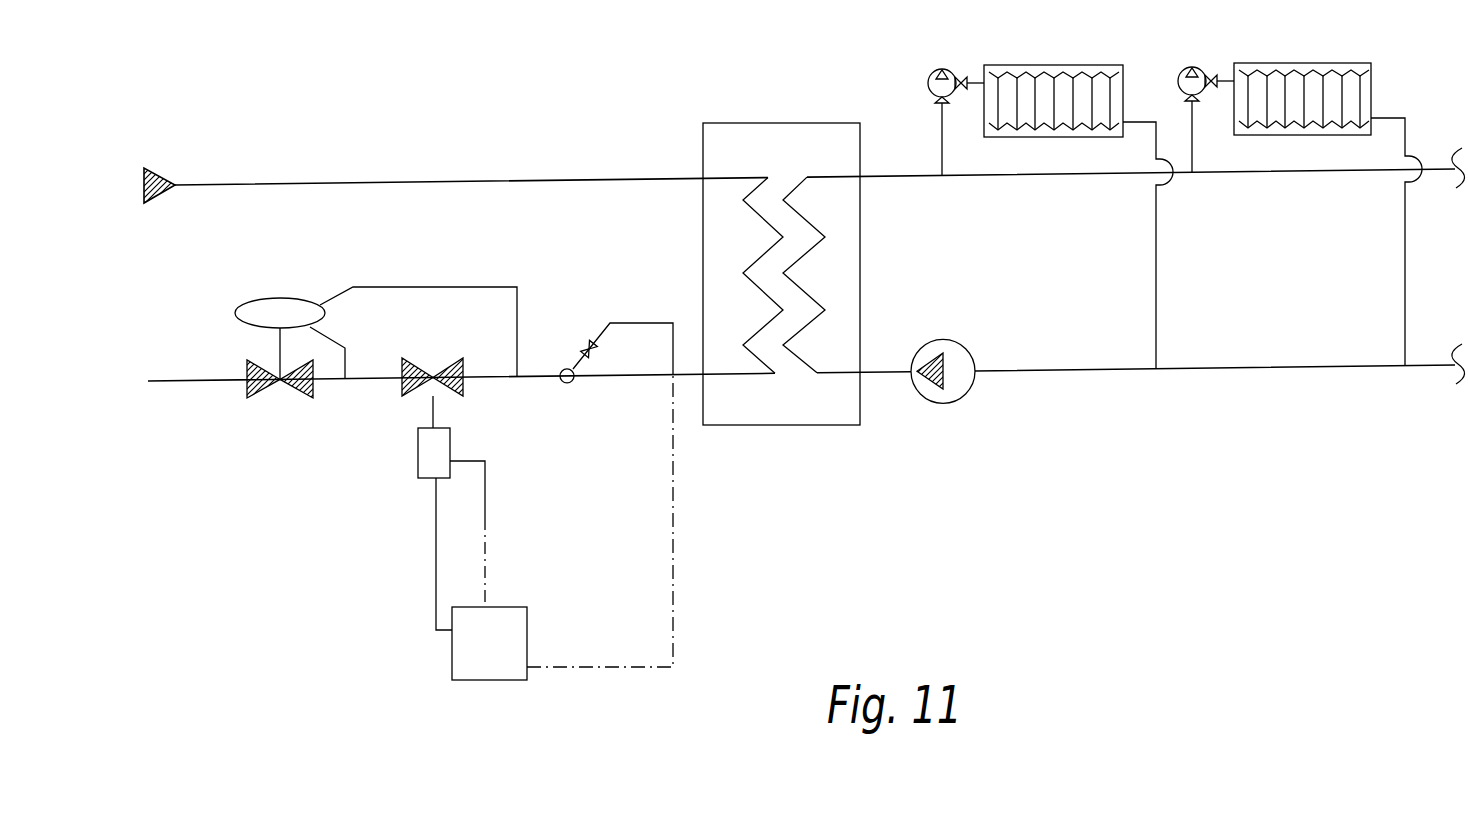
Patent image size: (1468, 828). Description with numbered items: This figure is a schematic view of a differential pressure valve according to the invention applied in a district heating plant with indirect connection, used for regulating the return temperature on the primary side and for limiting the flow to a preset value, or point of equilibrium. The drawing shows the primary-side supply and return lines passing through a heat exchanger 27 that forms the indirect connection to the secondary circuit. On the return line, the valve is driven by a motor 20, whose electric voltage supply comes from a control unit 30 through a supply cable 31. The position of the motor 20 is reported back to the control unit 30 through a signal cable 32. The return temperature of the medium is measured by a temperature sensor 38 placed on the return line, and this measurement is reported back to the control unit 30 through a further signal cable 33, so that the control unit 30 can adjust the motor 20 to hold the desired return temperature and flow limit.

The motor 20 is at (418, 445).
The heat exchanger 27 is at (760, 143).
The control unit 30 is at (517, 645).
The supply cable 31 is at (436, 598).
The signal cable 32 is at (485, 490).
The signal cable 33 is at (673, 643).
The temperature sensor 38 is at (567, 368).